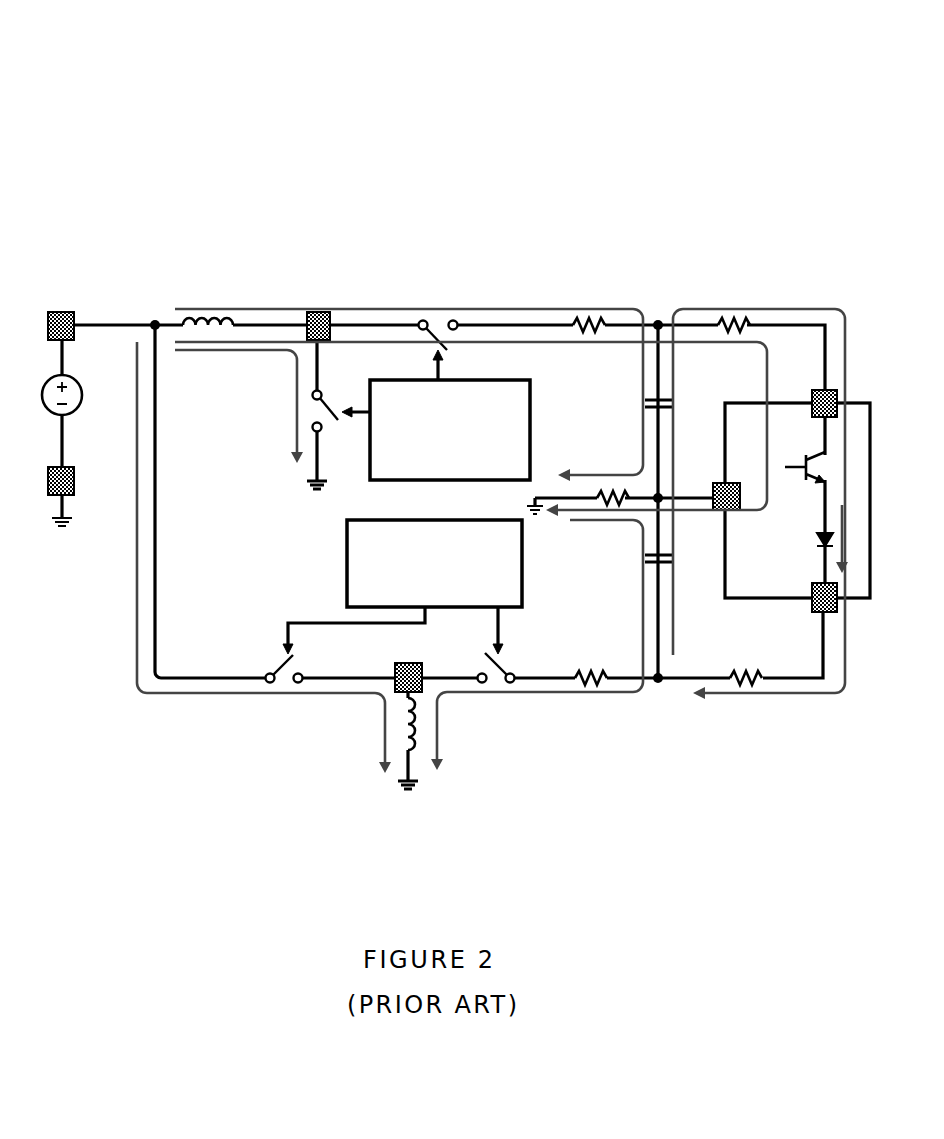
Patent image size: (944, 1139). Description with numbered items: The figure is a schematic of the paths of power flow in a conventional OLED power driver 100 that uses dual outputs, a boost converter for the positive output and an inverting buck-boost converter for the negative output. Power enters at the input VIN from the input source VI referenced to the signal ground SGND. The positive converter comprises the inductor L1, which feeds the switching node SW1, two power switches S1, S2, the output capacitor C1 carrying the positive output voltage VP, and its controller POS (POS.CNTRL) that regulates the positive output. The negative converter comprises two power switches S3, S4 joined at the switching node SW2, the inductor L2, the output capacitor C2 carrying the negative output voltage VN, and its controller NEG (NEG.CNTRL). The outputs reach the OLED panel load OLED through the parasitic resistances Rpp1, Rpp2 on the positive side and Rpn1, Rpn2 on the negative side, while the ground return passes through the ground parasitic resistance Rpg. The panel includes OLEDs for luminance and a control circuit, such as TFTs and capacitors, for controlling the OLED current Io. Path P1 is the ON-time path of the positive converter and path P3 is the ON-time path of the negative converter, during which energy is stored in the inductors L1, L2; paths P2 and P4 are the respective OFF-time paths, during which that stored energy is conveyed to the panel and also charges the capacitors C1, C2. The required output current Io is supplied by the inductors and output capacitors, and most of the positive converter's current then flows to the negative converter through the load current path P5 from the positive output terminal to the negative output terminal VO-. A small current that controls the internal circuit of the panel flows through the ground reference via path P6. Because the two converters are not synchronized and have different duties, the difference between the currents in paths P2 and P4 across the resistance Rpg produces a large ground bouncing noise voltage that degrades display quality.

The conventional OLED power driver 100 is at (643, 173).
The input voltage terminal VIN is at (67, 314).
The input voltage source VI is at (52, 395).
The signal ground SGND is at (94, 482).
The inductor of positive converter L1 is at (208, 307).
The switching node of positive converter SW1 is at (317, 315).
The power switch S1 is at (315, 411).
The power switch S2 is at (438, 325).
The power switch S3 is at (281, 681).
The power switch S4 is at (496, 682).
The switching node of negative converter SW2 is at (412, 668).
The inductor of negative converter L2 is at (427, 724).
The positive path parasitic resistance Rpp1 is at (586, 307).
The positive path parasitic resistance Rpp2 is at (733, 309).
The negative path parasitic resistance Rpn1 is at (589, 666).
The negative path parasitic resistance Rpn2 is at (747, 667).
The ground parasitic resistance Rpg is at (612, 486).
The capacitor of positive converter C1 is at (641, 407).
The capacitor of negative converter C2 is at (641, 564).
The positive output voltage VP is at (674, 400).
The negative output voltage VN is at (674, 565).
The negative output terminal VO- is at (840, 610).
The OLED current Io is at (850, 539).
The OLED panel load OLED is at (797, 500).
The positive converter controller POS is at (450, 430).
The negative converter controller NEG is at (434, 563).
The ON-time path of positive converter P1 is at (258, 352).
The OFF-time path of positive converter P2 is at (508, 309).
The ON-time path of negative converter P3 is at (190, 693).
The OFF-time path of negative converter P4 is at (612, 695).
The load current path P5 is at (800, 693).
The current path for control circuits P6 is at (612, 344).